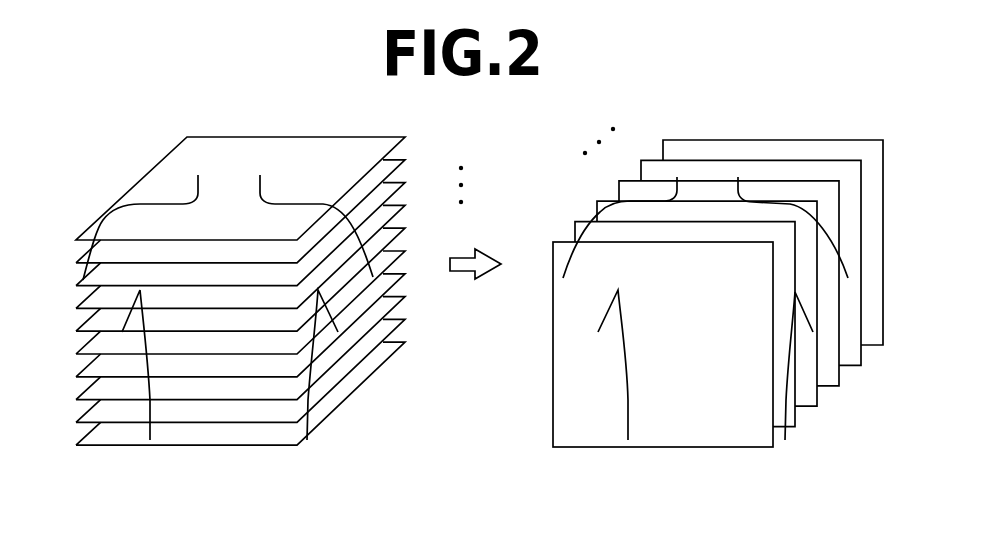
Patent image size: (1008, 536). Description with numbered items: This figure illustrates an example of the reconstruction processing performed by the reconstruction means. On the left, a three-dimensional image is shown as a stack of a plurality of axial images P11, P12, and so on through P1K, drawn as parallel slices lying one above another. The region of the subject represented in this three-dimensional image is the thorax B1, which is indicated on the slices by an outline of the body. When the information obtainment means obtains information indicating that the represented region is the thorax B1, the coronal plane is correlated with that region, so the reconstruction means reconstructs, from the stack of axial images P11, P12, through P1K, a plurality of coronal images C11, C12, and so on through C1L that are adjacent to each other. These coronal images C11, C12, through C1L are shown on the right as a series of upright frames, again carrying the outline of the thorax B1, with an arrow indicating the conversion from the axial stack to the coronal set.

The axial image P11 is at (405, 137).
The axial image P12 is at (405, 159).
The axial image P1K is at (398, 342).
The thorax B1 is at (173, 203).
The coronal image C11 is at (563, 242).
The coronal image C12 is at (587, 221).
The coronal image C1L is at (670, 140).